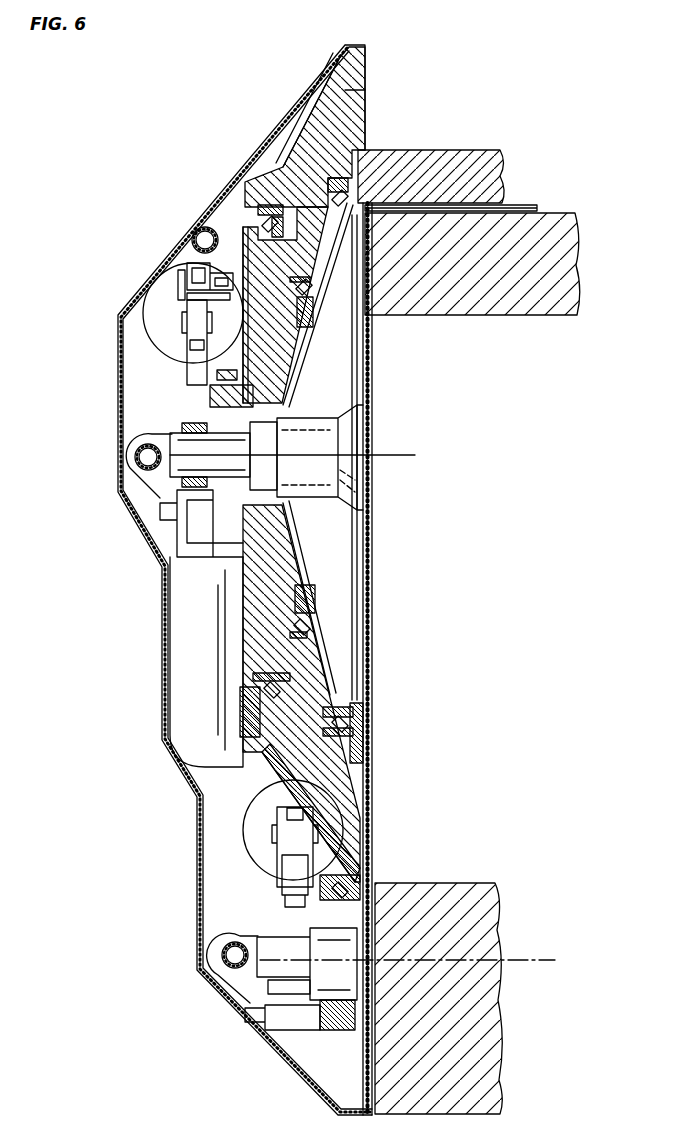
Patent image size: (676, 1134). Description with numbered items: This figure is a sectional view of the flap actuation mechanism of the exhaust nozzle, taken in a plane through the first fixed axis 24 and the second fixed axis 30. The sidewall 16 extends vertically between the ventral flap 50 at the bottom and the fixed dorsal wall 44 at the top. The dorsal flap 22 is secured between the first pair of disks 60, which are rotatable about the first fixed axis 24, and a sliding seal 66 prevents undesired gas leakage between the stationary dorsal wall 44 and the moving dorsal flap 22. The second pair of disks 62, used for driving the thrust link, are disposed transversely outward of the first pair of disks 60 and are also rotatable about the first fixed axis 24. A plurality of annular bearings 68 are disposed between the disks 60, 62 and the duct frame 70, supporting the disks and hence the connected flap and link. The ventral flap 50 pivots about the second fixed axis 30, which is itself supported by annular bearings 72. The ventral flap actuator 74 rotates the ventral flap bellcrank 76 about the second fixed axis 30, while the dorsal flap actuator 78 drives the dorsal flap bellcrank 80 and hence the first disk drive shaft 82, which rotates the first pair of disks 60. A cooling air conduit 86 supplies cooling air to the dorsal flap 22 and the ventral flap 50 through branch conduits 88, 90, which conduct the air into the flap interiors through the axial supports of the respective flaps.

The sidewall 16 is at (374, 365).
The dorsal flap 22 is at (580, 250).
The first fixed axis 24 is at (392, 455).
The second fixed axis 30 is at (542, 960).
The fixed dorsal wall 44 is at (475, 150).
The ventral flap 50 is at (492, 930).
The first pair of disks 60 is at (358, 575).
The second pair of disks 62 is at (373, 795).
The sliding seal 66 is at (520, 205).
The annular bearings 68 is at (285, 205).
The duct frame 70 is at (266, 178).
The annular bearings 72 is at (322, 905).
The ventral flap actuator 74 is at (246, 812).
The ventral flap bellcrank 76 is at (280, 905).
The dorsal flap actuator 78 is at (160, 348).
The dorsal flap bellcrank 80 is at (187, 378).
The first disk drive shaft 82 is at (240, 450).
The cooling air conduit 86 is at (212, 228).
The branch conduit 88 is at (152, 440).
The branch conduit 90 is at (233, 942).